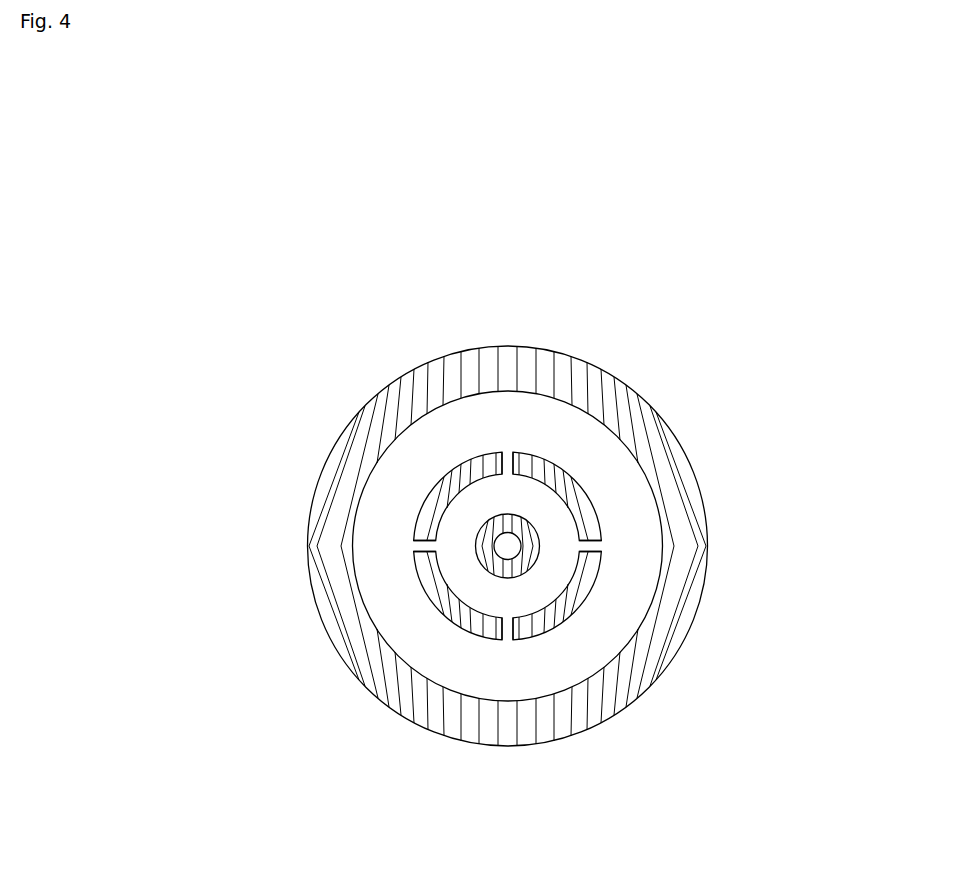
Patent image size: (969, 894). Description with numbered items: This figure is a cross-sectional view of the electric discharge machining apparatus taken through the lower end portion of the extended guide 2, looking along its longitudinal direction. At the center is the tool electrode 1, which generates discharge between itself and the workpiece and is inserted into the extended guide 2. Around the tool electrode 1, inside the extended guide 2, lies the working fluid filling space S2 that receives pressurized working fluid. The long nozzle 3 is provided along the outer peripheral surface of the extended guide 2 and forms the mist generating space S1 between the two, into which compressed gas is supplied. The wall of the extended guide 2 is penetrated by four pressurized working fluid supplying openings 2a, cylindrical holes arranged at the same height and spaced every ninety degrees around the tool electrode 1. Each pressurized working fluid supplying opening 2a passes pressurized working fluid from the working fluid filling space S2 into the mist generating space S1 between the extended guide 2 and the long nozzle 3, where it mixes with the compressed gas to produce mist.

The tool electrode 1 is at (538, 532).
The extended guide 2 is at (561, 476).
The pressurized working fluid supplying opening 2a is at (511, 456).
The long nozzle 3 is at (684, 597).
The mist generating space S1 is at (465, 432).
The working fluid filling space S2 is at (480, 585).